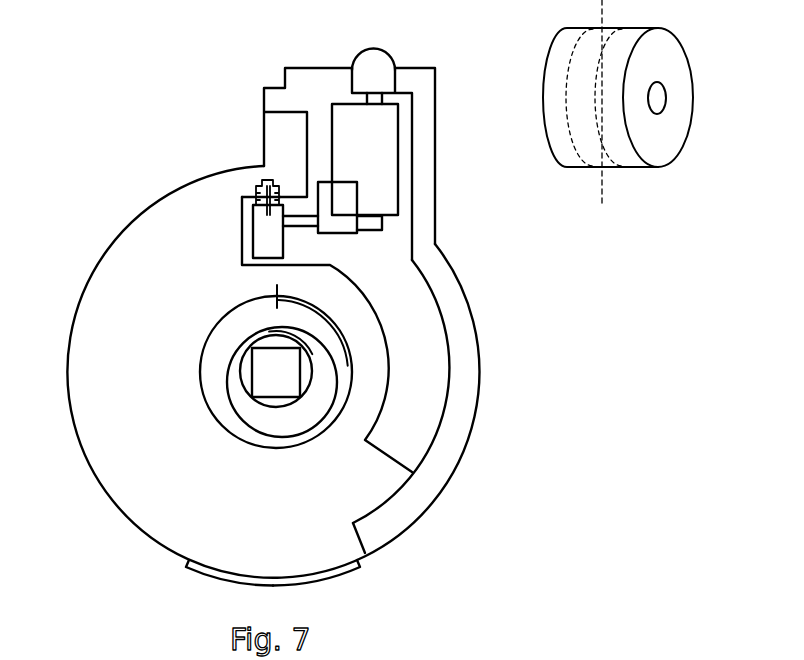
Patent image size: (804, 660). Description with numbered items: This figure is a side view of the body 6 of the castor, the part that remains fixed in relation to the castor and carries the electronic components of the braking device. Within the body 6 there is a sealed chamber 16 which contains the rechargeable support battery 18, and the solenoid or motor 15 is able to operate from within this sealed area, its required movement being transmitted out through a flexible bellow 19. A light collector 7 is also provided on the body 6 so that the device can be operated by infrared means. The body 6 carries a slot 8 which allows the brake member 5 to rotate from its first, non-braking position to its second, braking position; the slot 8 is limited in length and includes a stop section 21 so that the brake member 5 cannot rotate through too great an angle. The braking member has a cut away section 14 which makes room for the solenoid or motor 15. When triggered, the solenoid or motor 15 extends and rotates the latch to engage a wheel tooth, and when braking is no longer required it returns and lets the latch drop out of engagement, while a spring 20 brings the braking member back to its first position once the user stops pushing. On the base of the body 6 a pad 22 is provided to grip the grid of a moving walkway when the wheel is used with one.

The brake member 5 is at (657, 224).
The body 6 is at (630, 224).
The light receiver 7 is at (376, 67).
The slot 8 is at (427, 488).
The cut away section 14 is at (412, 397).
The solenoid or motor 15 is at (262, 236).
The sealed chamber 16 is at (382, 265).
The rechargeable support battery 18 is at (320, 198).
The flexible bellow 19 is at (254, 186).
The spring 20 is at (338, 367).
The stop section 21 is at (358, 537).
The pad 22 is at (194, 569).